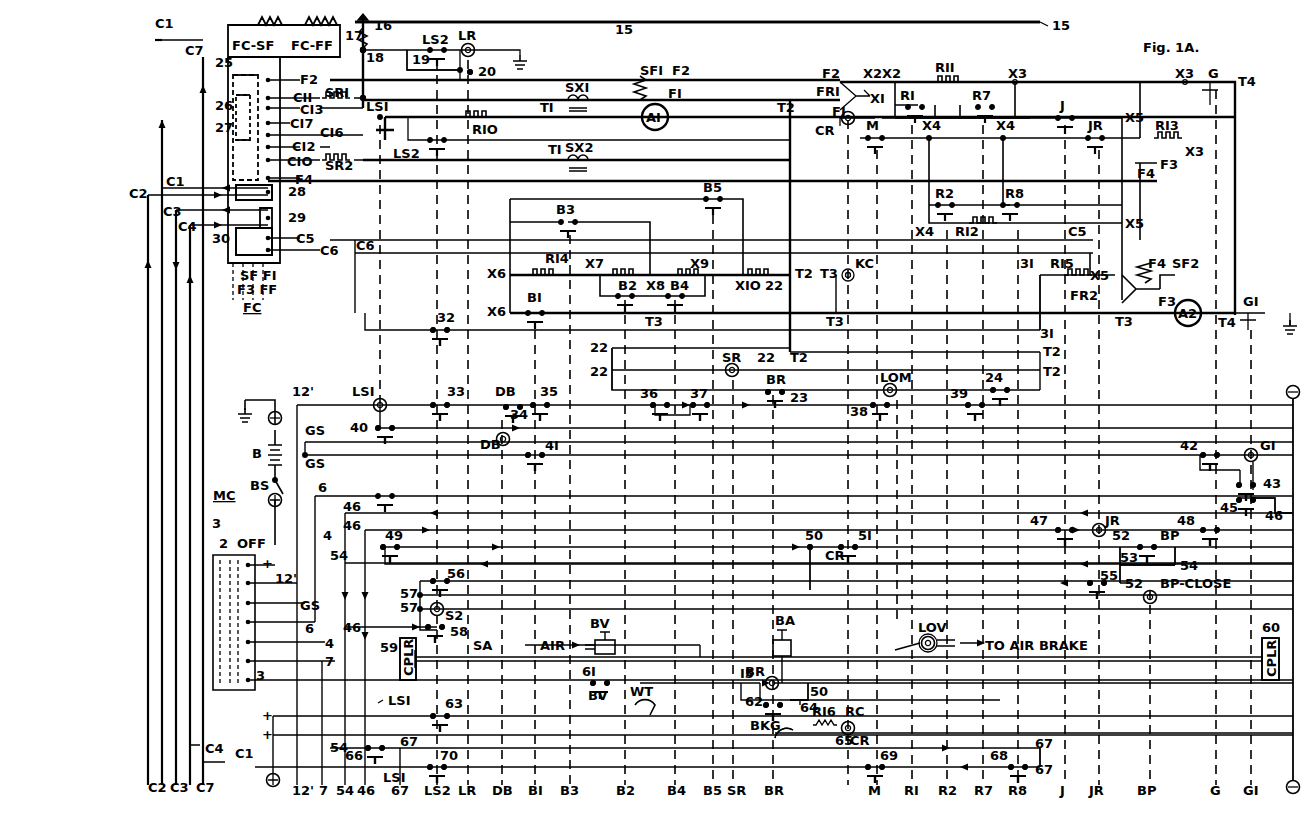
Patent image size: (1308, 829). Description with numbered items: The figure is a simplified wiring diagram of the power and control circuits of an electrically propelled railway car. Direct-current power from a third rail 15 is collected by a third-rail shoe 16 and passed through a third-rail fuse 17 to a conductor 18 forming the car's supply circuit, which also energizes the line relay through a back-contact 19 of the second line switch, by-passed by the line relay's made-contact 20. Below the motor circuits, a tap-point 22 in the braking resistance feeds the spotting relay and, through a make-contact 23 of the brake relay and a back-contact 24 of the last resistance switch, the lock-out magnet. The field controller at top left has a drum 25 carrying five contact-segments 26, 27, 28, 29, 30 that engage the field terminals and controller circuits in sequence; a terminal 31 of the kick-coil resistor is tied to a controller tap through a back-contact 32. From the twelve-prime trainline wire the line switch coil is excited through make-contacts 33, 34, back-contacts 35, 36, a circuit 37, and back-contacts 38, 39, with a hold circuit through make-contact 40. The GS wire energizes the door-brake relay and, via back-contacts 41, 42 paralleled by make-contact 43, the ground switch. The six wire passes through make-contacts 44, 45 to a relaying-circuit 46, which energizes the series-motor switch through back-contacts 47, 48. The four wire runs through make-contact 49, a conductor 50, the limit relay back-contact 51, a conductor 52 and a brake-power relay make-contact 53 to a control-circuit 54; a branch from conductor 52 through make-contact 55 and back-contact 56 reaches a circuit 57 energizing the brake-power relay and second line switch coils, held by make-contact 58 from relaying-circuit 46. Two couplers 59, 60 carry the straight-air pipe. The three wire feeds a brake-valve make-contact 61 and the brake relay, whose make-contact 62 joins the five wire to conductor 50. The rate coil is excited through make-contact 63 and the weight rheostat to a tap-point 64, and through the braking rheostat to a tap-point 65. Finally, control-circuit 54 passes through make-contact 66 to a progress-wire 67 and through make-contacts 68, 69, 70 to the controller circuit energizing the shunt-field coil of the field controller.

The third rail 15 is at (640, 20).
The third-rail shoe 16 is at (375, 23).
The third-rail fuse 17 is at (356, 38).
The conductor 18 is at (373, 57).
The back-contact of second line-switch LS2 19 is at (433, 60).
The made-contact of line-relay LR 20 is at (482, 71).
The tap-point 22 is at (601, 365).
The make-contact of brake-relay BR 23 is at (787, 399).
The back-contact of resistance-shorting switch R8 24 is at (997, 388).
The drum 25 is at (228, 78).
The contact-segment 26 is at (228, 92).
The contact-segment 27 is at (228, 142).
The contact-segment 28 is at (272, 192).
The contact-segment 29 is at (272, 218).
The contact-segment 30 is at (228, 252).
The terminal of kick-coil resistance R15 31 is at (1047, 308).
The back-contact of second line-switch LS2 32 is at (443, 328).
The make-contact of line-relay LR 33 is at (448, 402).
The make-contact of door-brake relay DB 34 is at (516, 414).
The back-contact of brake-switch B1 35 is at (544, 402).
The back-contact of brake-switch B4 36 is at (654, 403).
The circuit 37 is at (699, 403).
The back-contact of parallel-connection switch M 38 is at (869, 412).
The back-contact of resistance-shorting switch R7 39 is at (967, 403).
The make-contact of line-switch LS1 40 is at (372, 432).
The back-contact of brake-switch B1 41 is at (542, 454).
The back-contact of parallel-connection switch G 42 is at (1199, 454).
The make-contact of ground-switch G1 43 is at (1259, 488).
The make-contact of line-switch LS1 44 is at (391, 495).
The make-contact of ground-switch G1 45 is at (1237, 507).
The relaying-circuit 46 is at (1273, 510).
The back-contact of transition-switch J 47 is at (1052, 529).
The back-contact of parallel-connection switch G 48 is at (1198, 529).
The make-contact of line-switch LS1 49 is at (392, 545).
The conductor 50 is at (814, 559).
The back-contact of limit-relay CR 51 is at (855, 545).
The conductor 52 is at (1134, 545).
The make-contact of brake-power protective relay BP 53 is at (1129, 565).
The control-circuit 54 is at (1159, 560).
The make-contact of series-motor switch JR 55 is at (1103, 583).
The back-contact of second line-switch LS2 56 is at (448, 581).
The circuit 57 is at (411, 598).
The make-contact of second line-switch LS2 58 is at (447, 633).
The coupler 59 is at (398, 659).
The coupler 60 is at (1271, 650).
The make-contact of brake-valve BV 61 is at (595, 681).
The make-contact of brake-relay BR 62 is at (763, 707).
The make-contact of second line-switch LS2 63 is at (447, 714).
The tap-point of adjustable resistance R16 64 is at (804, 699).
The tap-point of adjustable resistance R16 65 is at (814, 738).
The make-contact of line-switch LS1 66 is at (364, 755).
The progress-wire 67 is at (1044, 751).
The make-contact of resistance-switch R8 68 is at (1008, 765).
The make-contact of parallel-connection switch M 69 is at (882, 765).
The make-contact of second line-switch LS2 70 is at (443, 765).